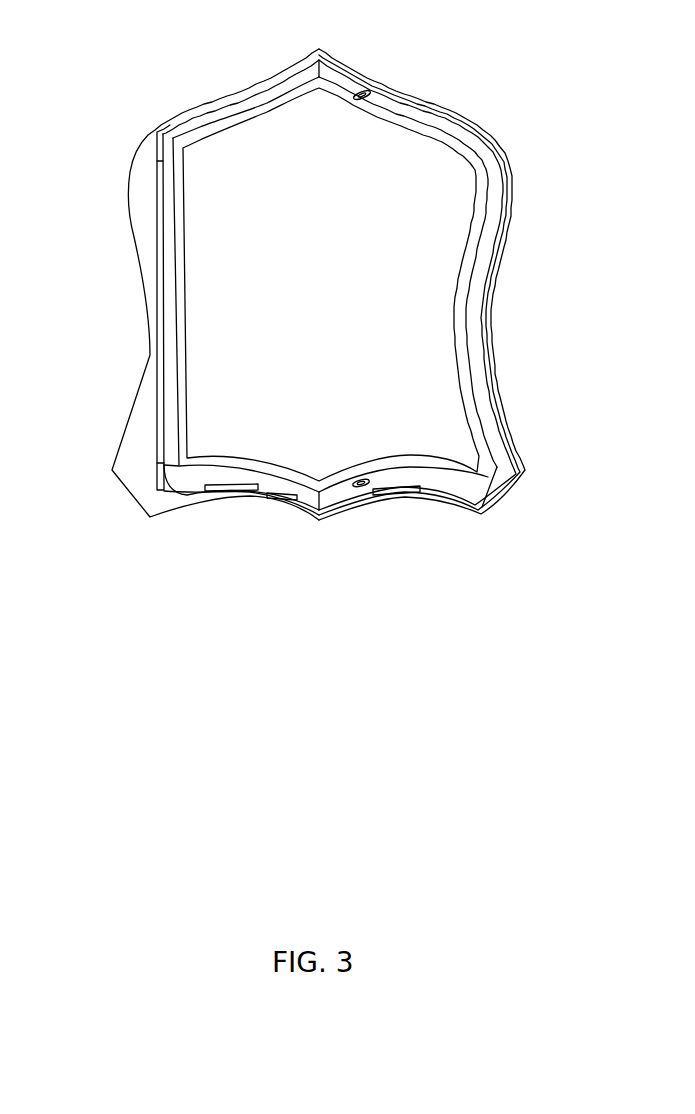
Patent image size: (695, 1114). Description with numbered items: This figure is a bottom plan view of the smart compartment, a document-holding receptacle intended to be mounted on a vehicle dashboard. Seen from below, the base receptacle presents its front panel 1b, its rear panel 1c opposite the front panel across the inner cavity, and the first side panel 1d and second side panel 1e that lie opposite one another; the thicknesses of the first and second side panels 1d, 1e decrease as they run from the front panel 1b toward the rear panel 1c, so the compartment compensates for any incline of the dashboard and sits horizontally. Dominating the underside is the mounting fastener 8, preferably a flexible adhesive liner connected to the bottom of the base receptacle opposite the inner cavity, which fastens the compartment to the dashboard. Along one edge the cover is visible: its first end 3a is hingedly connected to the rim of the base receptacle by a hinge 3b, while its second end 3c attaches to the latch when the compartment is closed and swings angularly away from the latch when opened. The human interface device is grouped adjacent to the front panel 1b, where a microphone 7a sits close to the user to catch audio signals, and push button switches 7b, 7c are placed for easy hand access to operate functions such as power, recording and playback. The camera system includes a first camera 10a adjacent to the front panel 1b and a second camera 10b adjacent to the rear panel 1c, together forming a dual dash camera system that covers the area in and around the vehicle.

The front panel 1b is at (458, 483).
The rear panel 1c is at (442, 125).
The first side panel 1d is at (472, 357).
The second side panel 1e is at (172, 424).
The first end 3a is at (137, 237).
The hinge 3b is at (157, 375).
The second end 3c is at (507, 422).
The microphone 7a is at (228, 490).
The push button switch 7b is at (298, 497).
The push button switch 7c is at (403, 490).
The mounting fastener 8 is at (446, 243).
The first camera 10a is at (358, 481).
The second camera 10b is at (358, 93).